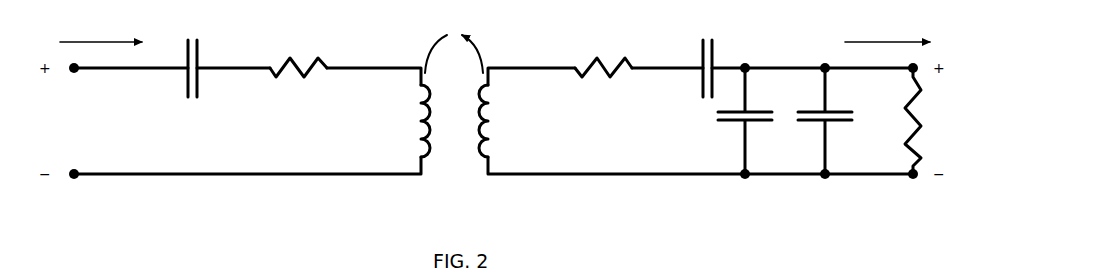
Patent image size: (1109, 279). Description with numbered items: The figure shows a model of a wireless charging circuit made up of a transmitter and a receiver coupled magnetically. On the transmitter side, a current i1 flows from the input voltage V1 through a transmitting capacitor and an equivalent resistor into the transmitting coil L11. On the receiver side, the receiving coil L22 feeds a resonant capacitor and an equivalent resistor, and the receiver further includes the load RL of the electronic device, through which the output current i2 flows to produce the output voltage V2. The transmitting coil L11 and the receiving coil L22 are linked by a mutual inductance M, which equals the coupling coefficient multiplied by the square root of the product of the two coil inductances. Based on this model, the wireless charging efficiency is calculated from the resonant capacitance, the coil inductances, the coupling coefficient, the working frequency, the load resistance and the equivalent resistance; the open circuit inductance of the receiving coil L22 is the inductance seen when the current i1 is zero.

The current i1 is at (101, 24).
The primary voltage V1 is at (81, 121).
The transmitting coil L11 is at (404, 121).
The receiving coil L22 is at (501, 121).
The mutual inductance M is at (454, 43).
The load RL is at (899, 121).
The secondary current i2 is at (887, 24).
The secondary voltage V2 is at (929, 121).